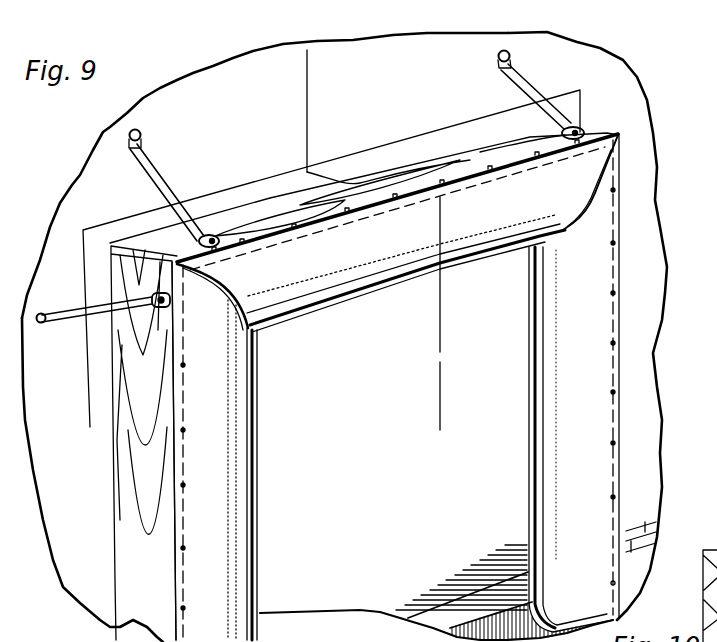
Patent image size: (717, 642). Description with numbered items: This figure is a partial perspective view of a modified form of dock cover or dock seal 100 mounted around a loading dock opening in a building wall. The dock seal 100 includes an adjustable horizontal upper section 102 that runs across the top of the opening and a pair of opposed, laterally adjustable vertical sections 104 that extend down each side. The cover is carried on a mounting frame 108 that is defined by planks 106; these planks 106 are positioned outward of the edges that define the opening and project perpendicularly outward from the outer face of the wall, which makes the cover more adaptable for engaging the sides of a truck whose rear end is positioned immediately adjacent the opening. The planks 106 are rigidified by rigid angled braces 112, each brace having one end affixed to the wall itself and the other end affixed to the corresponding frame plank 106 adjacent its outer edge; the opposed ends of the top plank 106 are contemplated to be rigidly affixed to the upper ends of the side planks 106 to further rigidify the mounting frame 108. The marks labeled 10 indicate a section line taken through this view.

The section line for FIG. 10 is at (343, 80).
The dock seal 100 is at (623, 410).
The adjustable horizontal upper section 102 is at (381, 296).
The laterally adjustable vertical sections 104 is at (262, 547).
The planks 106 is at (128, 518).
The mounting frame 108 is at (113, 436).
The rigid angled braces 112 is at (87, 307).